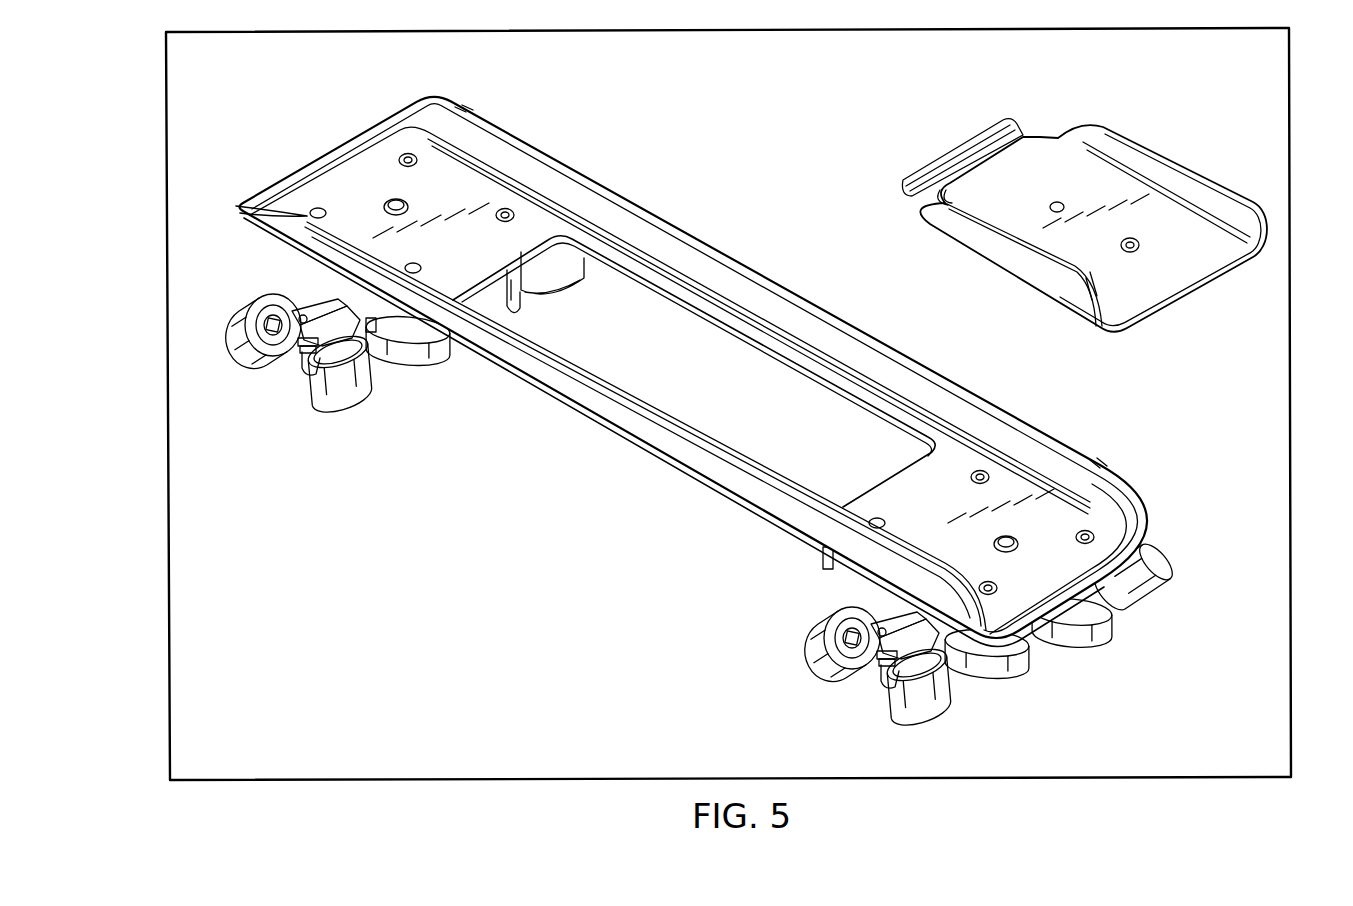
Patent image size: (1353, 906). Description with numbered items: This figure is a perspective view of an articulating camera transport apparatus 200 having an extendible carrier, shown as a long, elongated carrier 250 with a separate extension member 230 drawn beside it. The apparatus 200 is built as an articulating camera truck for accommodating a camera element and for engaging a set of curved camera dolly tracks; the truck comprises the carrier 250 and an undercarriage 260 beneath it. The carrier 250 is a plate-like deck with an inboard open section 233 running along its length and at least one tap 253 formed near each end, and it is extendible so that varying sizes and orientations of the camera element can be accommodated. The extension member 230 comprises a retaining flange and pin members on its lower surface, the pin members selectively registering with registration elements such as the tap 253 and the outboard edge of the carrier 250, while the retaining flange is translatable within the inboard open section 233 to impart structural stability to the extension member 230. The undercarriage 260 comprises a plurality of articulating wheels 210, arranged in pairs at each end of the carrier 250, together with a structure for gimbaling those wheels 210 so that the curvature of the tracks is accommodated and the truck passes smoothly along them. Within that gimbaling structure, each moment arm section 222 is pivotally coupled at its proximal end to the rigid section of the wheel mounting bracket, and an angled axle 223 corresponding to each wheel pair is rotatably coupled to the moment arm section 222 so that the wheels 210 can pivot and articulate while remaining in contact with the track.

The articulating camera transport apparatus 200 is at (167, 453).
The articulating wheels 210 is at (351, 410).
The moment arm section 222 is at (296, 292).
The angled axle 223 is at (306, 366).
The extension member 230 is at (1121, 333).
The inboard open section 233 is at (860, 431).
The carrier 250 is at (700, 476).
The tap 253 is at (388, 200).
The undercarriage 260 is at (417, 336).